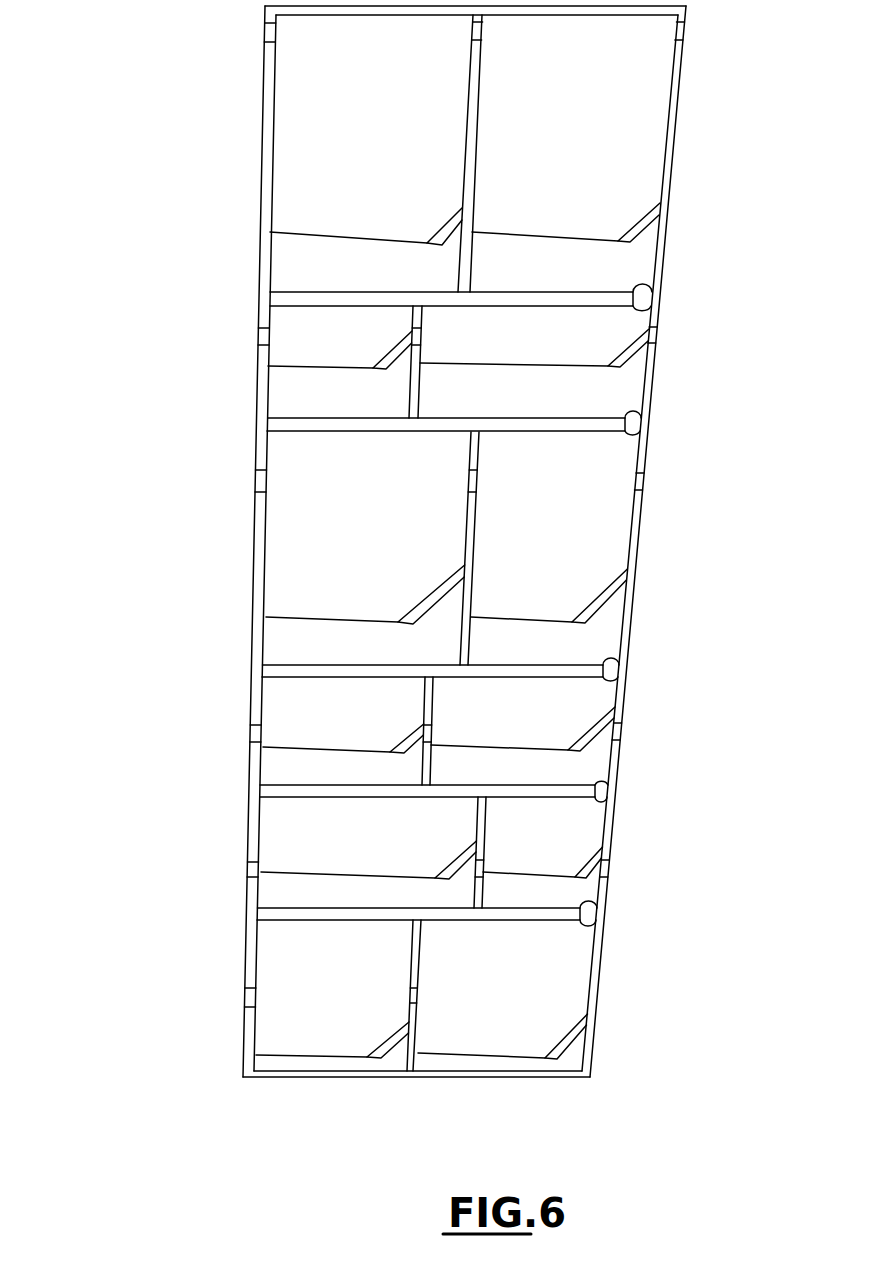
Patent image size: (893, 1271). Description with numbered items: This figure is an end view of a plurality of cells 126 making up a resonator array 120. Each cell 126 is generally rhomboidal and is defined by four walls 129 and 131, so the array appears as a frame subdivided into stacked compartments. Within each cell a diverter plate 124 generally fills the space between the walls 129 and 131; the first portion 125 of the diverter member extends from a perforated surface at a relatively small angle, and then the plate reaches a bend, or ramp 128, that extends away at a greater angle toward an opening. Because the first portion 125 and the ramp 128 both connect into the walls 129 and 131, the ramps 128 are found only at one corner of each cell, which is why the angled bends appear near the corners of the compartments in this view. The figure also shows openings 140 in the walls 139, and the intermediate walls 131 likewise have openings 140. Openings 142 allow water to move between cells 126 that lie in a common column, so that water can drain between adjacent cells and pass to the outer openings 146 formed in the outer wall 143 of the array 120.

The resonator array 120 is at (163, 306).
The diverter plate 124 is at (303, 987).
The first portion 125 is at (580, 545).
The cell 126 is at (280, 506).
The ramp 128 is at (620, 585).
The wall 129 is at (470, 522).
The intermediate wall 131 is at (422, 950).
The wall 139 is at (253, 818).
The opening 140 is at (245, 997).
The opening 142 is at (643, 397).
The outer wall 143 is at (652, 303).
The outer opening 146 is at (647, 482).